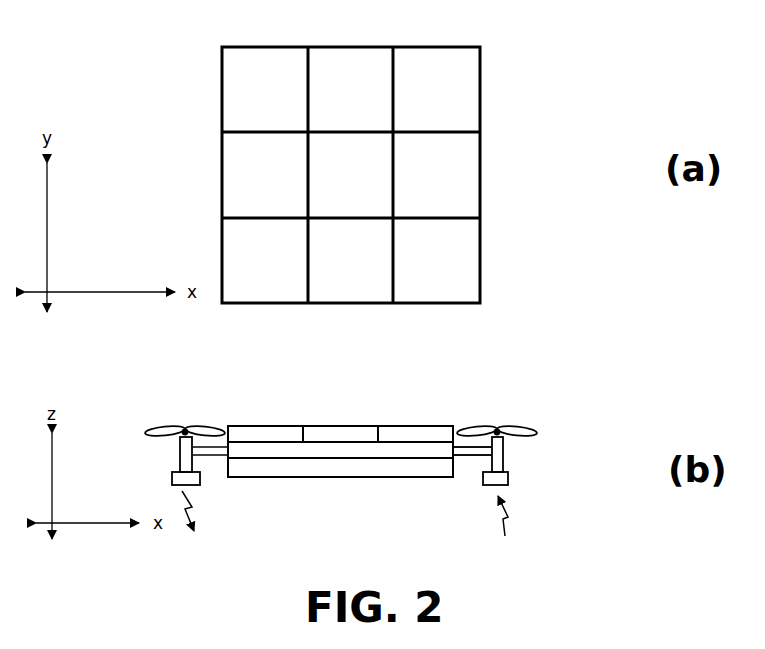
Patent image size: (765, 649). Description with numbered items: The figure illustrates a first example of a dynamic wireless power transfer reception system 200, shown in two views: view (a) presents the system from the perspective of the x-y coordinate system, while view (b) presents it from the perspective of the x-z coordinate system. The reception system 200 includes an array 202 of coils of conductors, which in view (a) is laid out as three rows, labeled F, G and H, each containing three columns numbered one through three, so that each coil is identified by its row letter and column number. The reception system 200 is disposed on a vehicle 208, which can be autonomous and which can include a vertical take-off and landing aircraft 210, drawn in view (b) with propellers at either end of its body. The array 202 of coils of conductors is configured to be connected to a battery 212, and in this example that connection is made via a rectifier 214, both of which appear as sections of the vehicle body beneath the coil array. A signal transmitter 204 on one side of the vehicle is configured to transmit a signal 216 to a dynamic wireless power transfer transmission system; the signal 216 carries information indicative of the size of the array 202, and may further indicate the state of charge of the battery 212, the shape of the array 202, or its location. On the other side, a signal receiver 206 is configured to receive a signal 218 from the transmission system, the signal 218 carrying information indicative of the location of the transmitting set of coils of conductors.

The dynamic wireless power transfer (DWPT) reception system 200 is at (638, 62).
The array of coils of conductors 202 is at (545, 166).
The signal transmitter 204 is at (177, 478).
The signal receiver 206 is at (508, 480).
The vehicle 208 is at (508, 455).
The vertical take-off and landing (VTOL) aircraft 210 is at (549, 446).
The battery 212 is at (420, 468).
The rectifier 214 is at (343, 452).
The signal 216 is at (194, 517).
The signal 218 is at (505, 536).